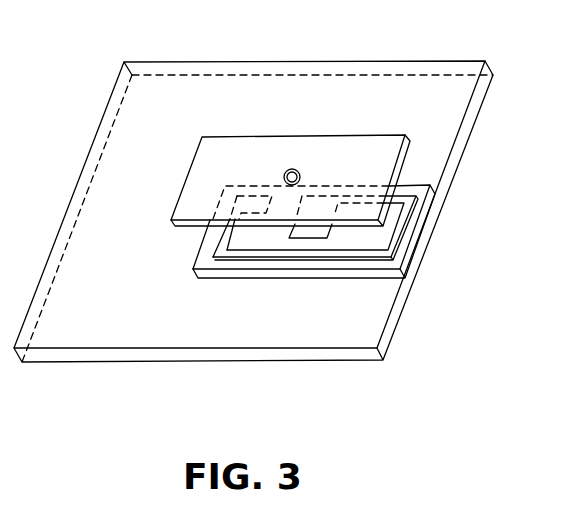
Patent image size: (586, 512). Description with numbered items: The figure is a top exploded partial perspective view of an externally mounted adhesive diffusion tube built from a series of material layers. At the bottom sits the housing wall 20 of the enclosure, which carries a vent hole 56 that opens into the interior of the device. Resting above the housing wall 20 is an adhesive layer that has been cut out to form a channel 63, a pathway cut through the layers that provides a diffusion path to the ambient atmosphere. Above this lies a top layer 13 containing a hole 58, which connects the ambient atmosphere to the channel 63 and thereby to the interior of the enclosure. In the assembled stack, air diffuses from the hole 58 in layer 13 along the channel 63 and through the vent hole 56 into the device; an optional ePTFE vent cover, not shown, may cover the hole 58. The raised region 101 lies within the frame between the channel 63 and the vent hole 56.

The housing wall 20 is at (480, 100).
The layer 13 is at (348, 143).
The hole 58 is at (290, 169).
The vent hole 56 is at (256, 212).
The raised rim with opening 101 is at (380, 231).
The channel 63 is at (320, 257).